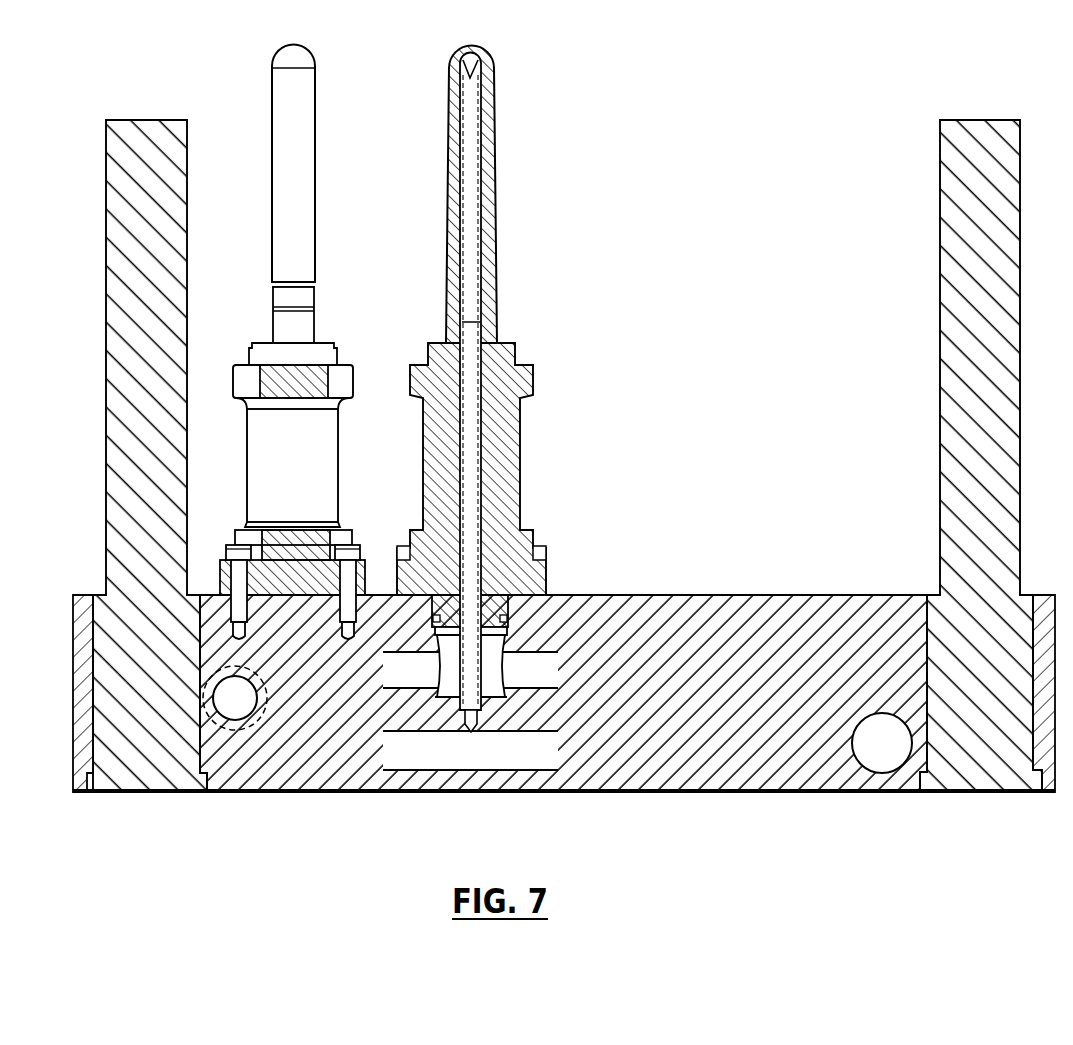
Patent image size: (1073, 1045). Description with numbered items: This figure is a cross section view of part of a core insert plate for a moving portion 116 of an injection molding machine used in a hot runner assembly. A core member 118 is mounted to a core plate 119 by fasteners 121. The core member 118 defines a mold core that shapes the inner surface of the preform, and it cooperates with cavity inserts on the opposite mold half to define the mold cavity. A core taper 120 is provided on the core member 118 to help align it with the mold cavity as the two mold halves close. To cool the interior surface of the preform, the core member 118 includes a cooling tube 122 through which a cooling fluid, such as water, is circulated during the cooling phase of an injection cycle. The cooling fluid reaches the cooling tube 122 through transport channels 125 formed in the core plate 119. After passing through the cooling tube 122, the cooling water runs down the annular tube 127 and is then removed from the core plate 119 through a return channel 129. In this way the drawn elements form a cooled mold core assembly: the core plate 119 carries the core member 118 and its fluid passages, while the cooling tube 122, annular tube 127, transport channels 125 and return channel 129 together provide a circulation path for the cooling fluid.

The moving portion 116 is at (723, 243).
The core member 118 is at (497, 198).
The core plate 119 is at (635, 782).
The core taper 120 is at (337, 356).
The fasteners 121 is at (352, 553).
The cooling tube 122 is at (497, 322).
The transport channels 125 is at (437, 752).
The annular tube 127 is at (483, 445).
The return channel 129 is at (540, 672).